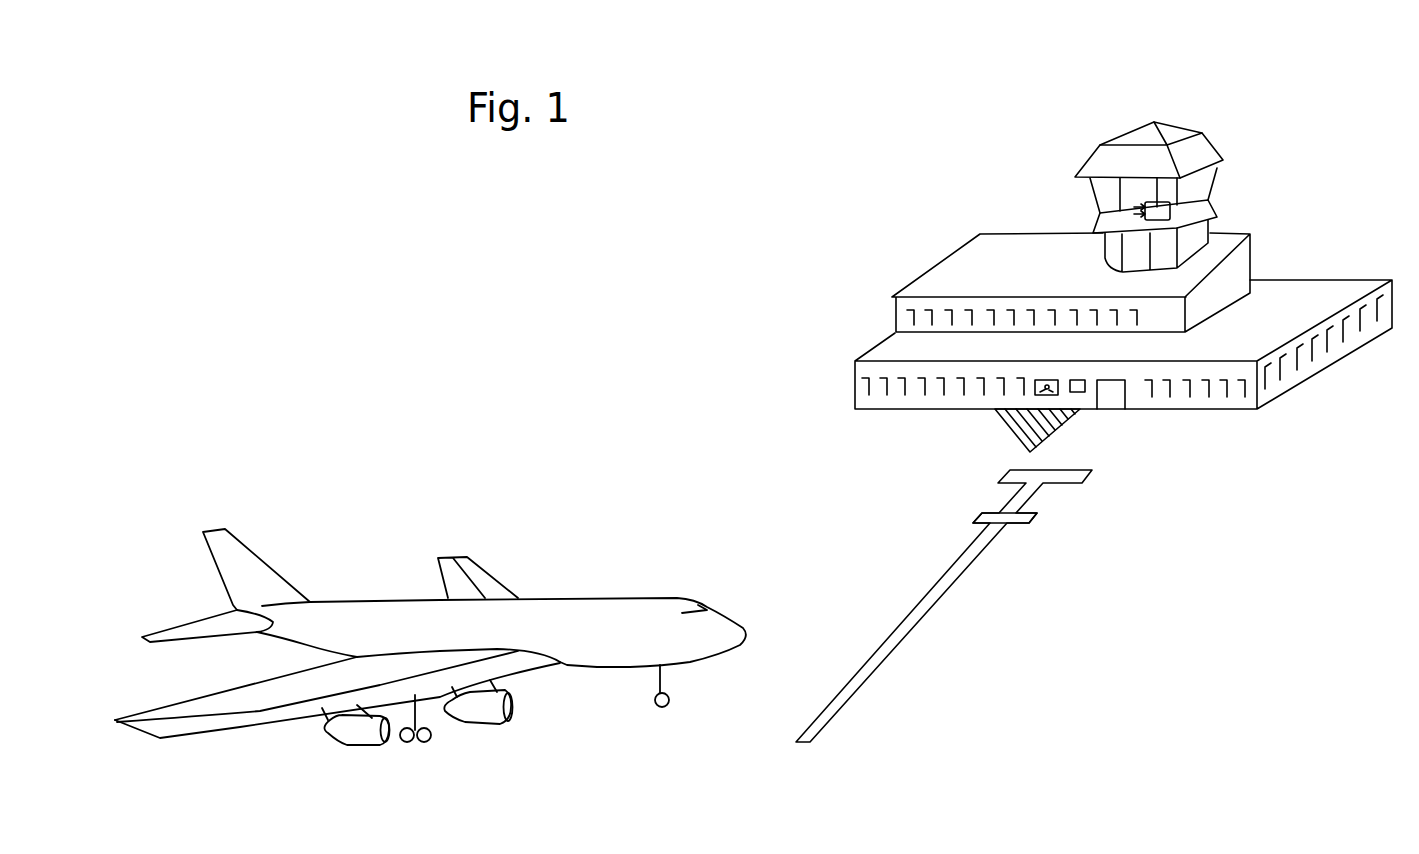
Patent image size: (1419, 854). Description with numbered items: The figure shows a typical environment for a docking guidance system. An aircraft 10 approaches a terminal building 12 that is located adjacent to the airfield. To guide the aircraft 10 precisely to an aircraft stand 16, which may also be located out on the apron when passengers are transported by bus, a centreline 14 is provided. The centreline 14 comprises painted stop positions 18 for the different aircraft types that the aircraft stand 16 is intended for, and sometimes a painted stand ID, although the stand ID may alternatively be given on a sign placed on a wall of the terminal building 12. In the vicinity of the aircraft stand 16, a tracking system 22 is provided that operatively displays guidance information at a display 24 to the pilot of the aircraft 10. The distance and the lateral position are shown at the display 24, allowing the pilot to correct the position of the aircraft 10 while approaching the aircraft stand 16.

The aircraft 10 is at (662, 596).
The terminal building 12 is at (1040, 188).
The centreline 14 is at (892, 652).
The aircraft stand 16 is at (1126, 394).
The painted stop positions 18 is at (1037, 515).
The tracking system 22 is at (1083, 380).
The display 24 is at (1046, 380).